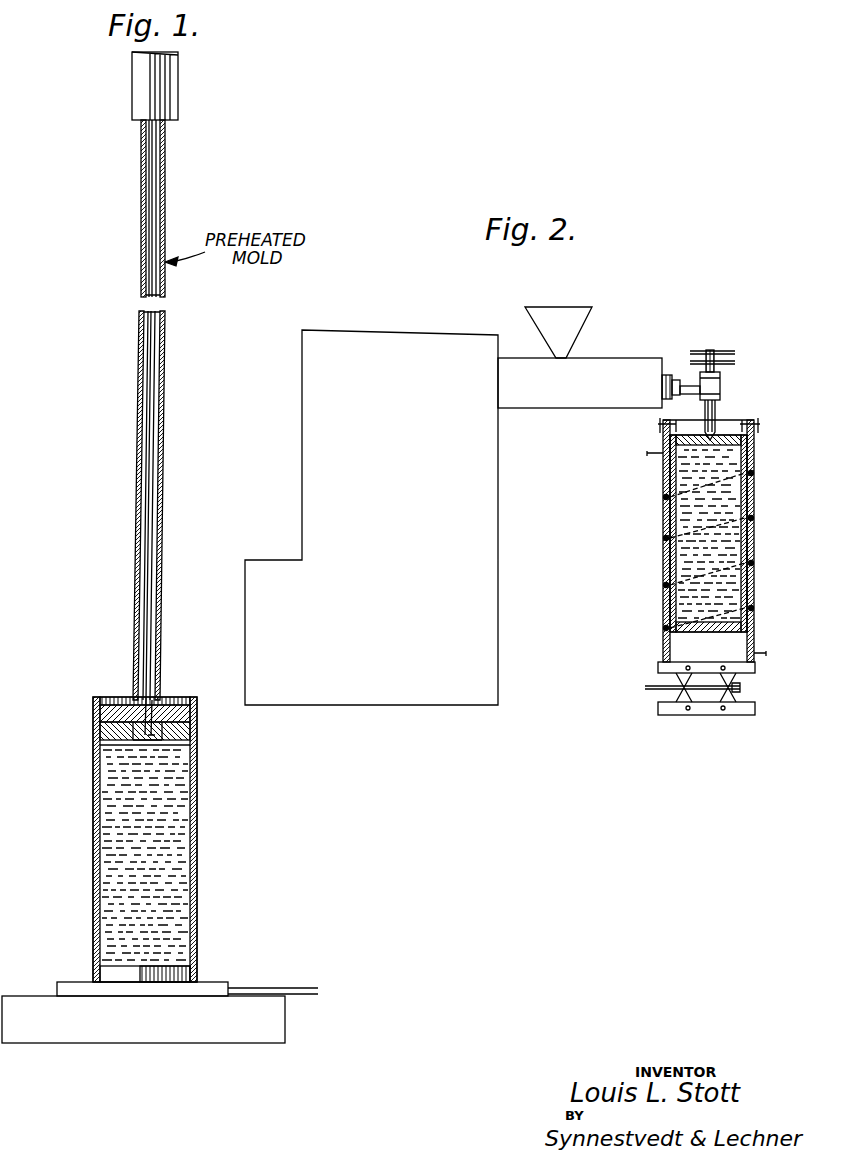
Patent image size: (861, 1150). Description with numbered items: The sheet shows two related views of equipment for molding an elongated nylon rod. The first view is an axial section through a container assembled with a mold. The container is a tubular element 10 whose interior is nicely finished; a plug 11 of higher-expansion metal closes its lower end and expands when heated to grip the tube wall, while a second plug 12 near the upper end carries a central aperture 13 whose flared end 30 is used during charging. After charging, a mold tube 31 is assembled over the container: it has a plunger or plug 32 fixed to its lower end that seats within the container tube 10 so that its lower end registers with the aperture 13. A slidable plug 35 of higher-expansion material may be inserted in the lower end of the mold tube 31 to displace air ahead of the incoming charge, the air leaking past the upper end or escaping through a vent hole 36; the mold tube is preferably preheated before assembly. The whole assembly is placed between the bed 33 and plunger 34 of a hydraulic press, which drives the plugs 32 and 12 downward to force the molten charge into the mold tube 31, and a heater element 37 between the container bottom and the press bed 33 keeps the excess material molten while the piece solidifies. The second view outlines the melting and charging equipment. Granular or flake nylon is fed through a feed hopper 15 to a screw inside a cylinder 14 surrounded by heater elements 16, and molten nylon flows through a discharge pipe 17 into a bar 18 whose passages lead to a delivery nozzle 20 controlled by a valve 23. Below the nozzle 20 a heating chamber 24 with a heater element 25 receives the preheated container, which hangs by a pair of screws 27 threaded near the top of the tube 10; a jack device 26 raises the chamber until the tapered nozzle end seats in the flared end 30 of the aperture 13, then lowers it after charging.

In FIG. 1, the tubular element 10 is at (197, 848).
In FIG. 2, the tubular element 10 is at (670, 556).
In FIG. 1, the plug 11 is at (165, 974).
In FIG. 2, the plug 11 is at (682, 630).
In FIG. 1, the plug 12 is at (180, 742).
In FIG. 2, the plug 12 is at (682, 446).
In FIG. 1, the central aperture 13 is at (140, 744).
In FIG. 2, the cylinder 14 is at (668, 375).
In FIG. 2, the feed hopper 15 is at (525, 310).
In FIG. 2, the heater elements 16 is at (512, 410).
In FIG. 2, the discharge pipe 17 is at (683, 385).
In FIG. 2, the bar 18 is at (720, 386).
In FIG. 2, the delivery nozzle 20 is at (716, 420).
In FIG. 2, the valve 23 is at (722, 361).
In FIG. 2, the heating chamber 24 is at (663, 604).
In FIG. 2, the heater element 25 is at (668, 497).
In FIG. 2, the jack device 26 is at (662, 690).
In FIG. 2, the screws 27 is at (660, 424).
In FIG. 1, the flared end 30 is at (170, 718).
In FIG. 1, the mold tube 31 is at (165, 406).
In FIG. 1, the plunger or plug 32 is at (112, 700).
In FIG. 1, the press bed 33 is at (118, 1032).
In FIG. 1, the plunger 34 is at (132, 98).
In FIG. 1, the slidable plug 35 is at (150, 704).
In FIG. 1, the vent hole 36 is at (170, 128).
In FIG. 1, the heater element 37 is at (214, 989).